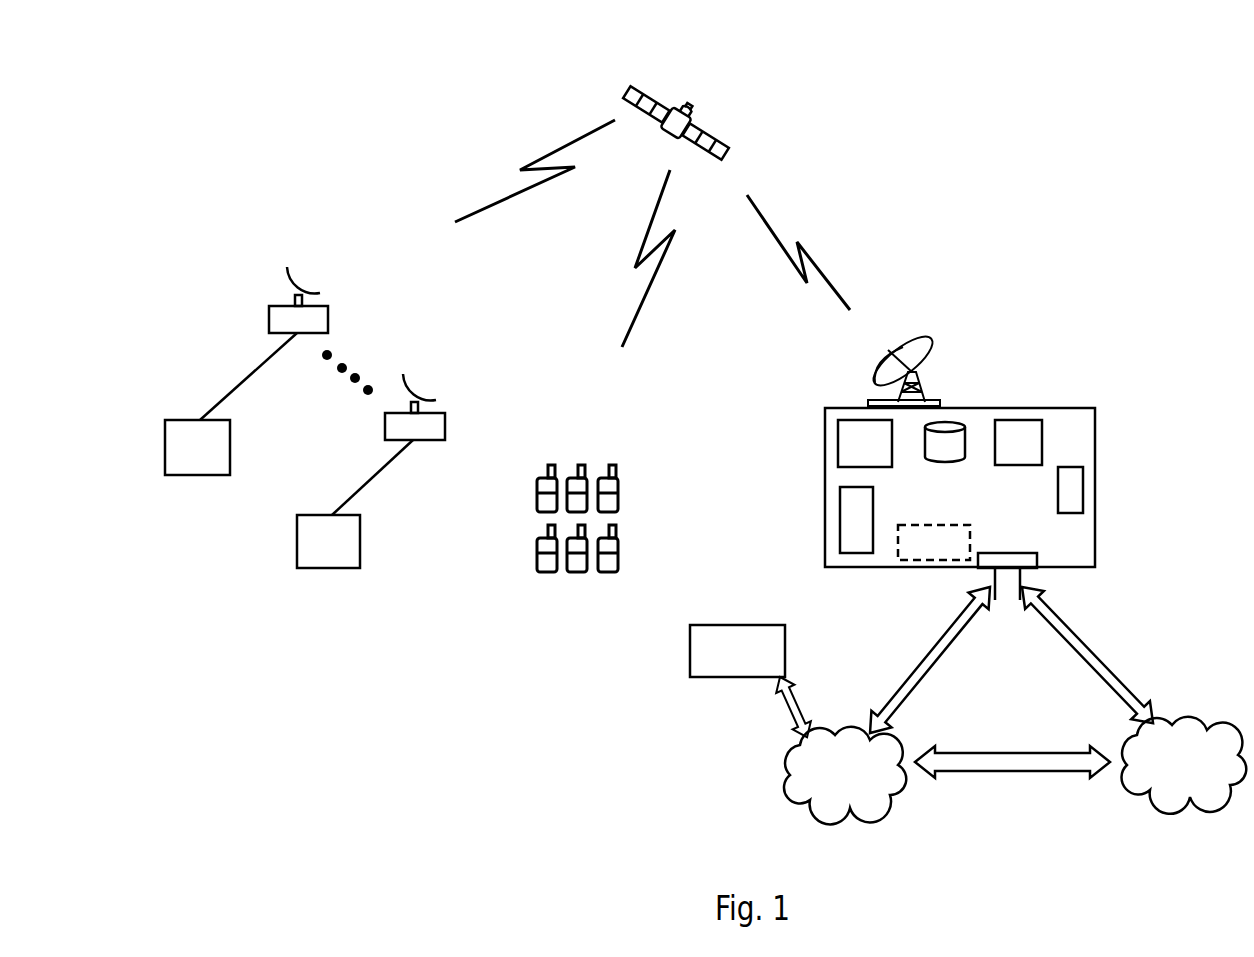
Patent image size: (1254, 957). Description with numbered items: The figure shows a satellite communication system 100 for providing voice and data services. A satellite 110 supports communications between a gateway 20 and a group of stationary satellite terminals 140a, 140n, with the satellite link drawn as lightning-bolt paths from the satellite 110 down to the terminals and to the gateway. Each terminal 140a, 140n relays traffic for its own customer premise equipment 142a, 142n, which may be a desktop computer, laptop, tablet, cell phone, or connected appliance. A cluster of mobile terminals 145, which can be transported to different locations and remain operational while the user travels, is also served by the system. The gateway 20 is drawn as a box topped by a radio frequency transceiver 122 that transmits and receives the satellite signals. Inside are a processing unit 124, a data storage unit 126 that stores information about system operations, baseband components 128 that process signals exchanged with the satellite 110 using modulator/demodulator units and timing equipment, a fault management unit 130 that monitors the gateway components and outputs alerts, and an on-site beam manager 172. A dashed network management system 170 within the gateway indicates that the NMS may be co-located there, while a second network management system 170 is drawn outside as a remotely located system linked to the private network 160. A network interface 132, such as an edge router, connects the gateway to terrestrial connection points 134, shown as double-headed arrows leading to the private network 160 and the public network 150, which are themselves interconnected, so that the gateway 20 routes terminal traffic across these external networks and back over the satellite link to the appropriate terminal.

The satellite communication system 100 is at (1080, 57).
The satellite 110 is at (713, 130).
The gateway 20 is at (1122, 312).
The radio frequency transceiver 122 is at (933, 345).
The processing unit 124 is at (838, 443).
The data storage unit 126 is at (948, 462).
The baseband components 128 is at (840, 522).
The fault management unit 130 is at (1033, 420).
The network interface 132 is at (1003, 553).
The terrestrial connection point 134 is at (1007, 605).
The network management system 170 is at (927, 558).
The beam manager 172 is at (1083, 488).
The stationary satellite terminal 140a is at (268, 318).
The stationary satellite terminal 140n is at (385, 425).
The customer premise equipment 142a is at (200, 475).
The customer premise equipment 142n is at (332, 568).
The mobile terminals 145 is at (515, 580).
The public network 150 is at (1184, 772).
The private network 160 is at (845, 782).